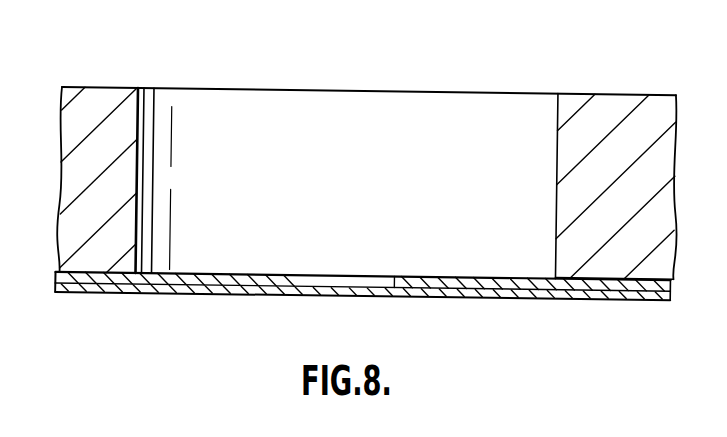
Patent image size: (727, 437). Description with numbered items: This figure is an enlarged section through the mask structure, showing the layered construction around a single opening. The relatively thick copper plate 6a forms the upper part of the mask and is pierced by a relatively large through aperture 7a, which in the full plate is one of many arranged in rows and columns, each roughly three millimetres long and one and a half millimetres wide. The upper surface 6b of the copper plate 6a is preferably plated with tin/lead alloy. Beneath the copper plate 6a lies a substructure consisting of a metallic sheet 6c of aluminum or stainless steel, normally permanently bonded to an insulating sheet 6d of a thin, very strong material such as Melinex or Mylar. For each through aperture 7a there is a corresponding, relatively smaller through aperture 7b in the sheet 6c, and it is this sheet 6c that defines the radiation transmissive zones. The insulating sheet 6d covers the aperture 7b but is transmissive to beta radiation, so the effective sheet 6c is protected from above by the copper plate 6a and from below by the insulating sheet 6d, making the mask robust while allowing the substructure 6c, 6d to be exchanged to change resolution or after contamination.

The copper plate 6a is at (97, 98).
The upper surface of the copper plate 6b is at (637, 93).
The metallic sheet 6c is at (59, 283).
The insulating sheet 6d is at (125, 293).
The through apertures 7a is at (508, 104).
The through aperture 7b is at (333, 282).